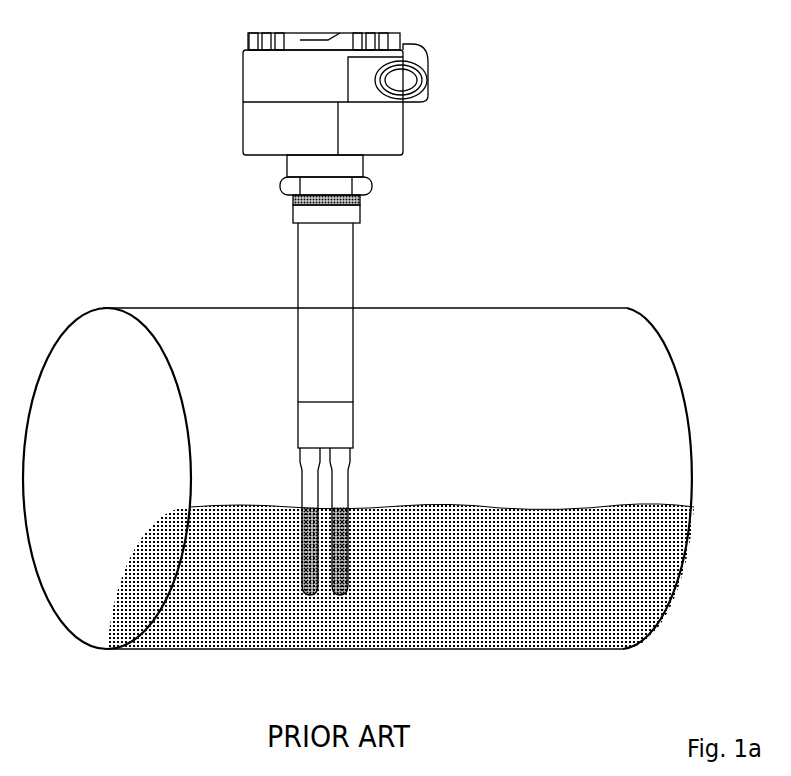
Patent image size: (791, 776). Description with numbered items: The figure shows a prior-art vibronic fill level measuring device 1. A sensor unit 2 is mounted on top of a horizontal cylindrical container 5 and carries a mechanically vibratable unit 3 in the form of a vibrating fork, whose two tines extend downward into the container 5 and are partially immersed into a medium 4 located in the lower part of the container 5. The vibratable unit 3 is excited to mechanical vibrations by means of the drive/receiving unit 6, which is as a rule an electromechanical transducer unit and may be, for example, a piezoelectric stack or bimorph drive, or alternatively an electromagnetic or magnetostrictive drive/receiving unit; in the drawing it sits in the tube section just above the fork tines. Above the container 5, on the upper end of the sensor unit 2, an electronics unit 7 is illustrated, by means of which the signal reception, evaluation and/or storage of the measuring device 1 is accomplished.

The vibronic fill level measuring device 1 is at (50, 23).
The sensor unit 2 is at (397, 460).
The mechanically vibratable unit 3 is at (352, 535).
The medium 4 is at (537, 603).
The container 5 is at (648, 630).
The drive/receiving unit 6 is at (337, 415).
The electronics unit 7 is at (382, 132).